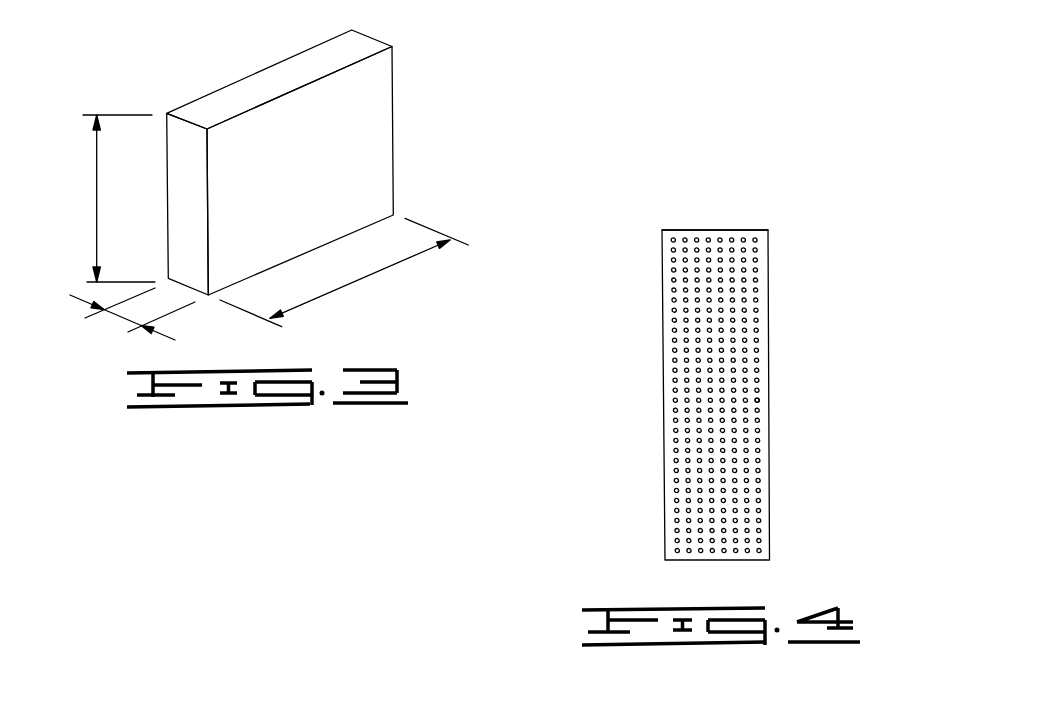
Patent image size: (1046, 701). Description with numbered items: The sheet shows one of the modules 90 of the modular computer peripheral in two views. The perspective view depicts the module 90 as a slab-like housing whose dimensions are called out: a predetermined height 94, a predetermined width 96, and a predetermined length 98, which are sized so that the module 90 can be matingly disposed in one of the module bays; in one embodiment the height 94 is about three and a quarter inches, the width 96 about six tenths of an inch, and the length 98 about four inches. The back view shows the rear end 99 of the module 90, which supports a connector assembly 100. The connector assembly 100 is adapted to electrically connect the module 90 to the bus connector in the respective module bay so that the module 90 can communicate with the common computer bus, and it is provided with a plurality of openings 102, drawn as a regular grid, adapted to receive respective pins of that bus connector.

In FIG. 3, the module 90 is at (255, 73).
In FIG. 4, the module 90 is at (645, 350).
In FIG. 3, the predetermined height 94 is at (97, 198).
In FIG. 3, the predetermined width 96 is at (117, 318).
In FIG. 3, the predetermined length 98 is at (371, 276).
In FIG. 3, the rear end 99 is at (372, 38).
In FIG. 4, the rear end 99 is at (713, 230).
In FIG. 4, the connector assembly 100 is at (764, 327).
In FIG. 4, the openings 102 is at (759, 401).